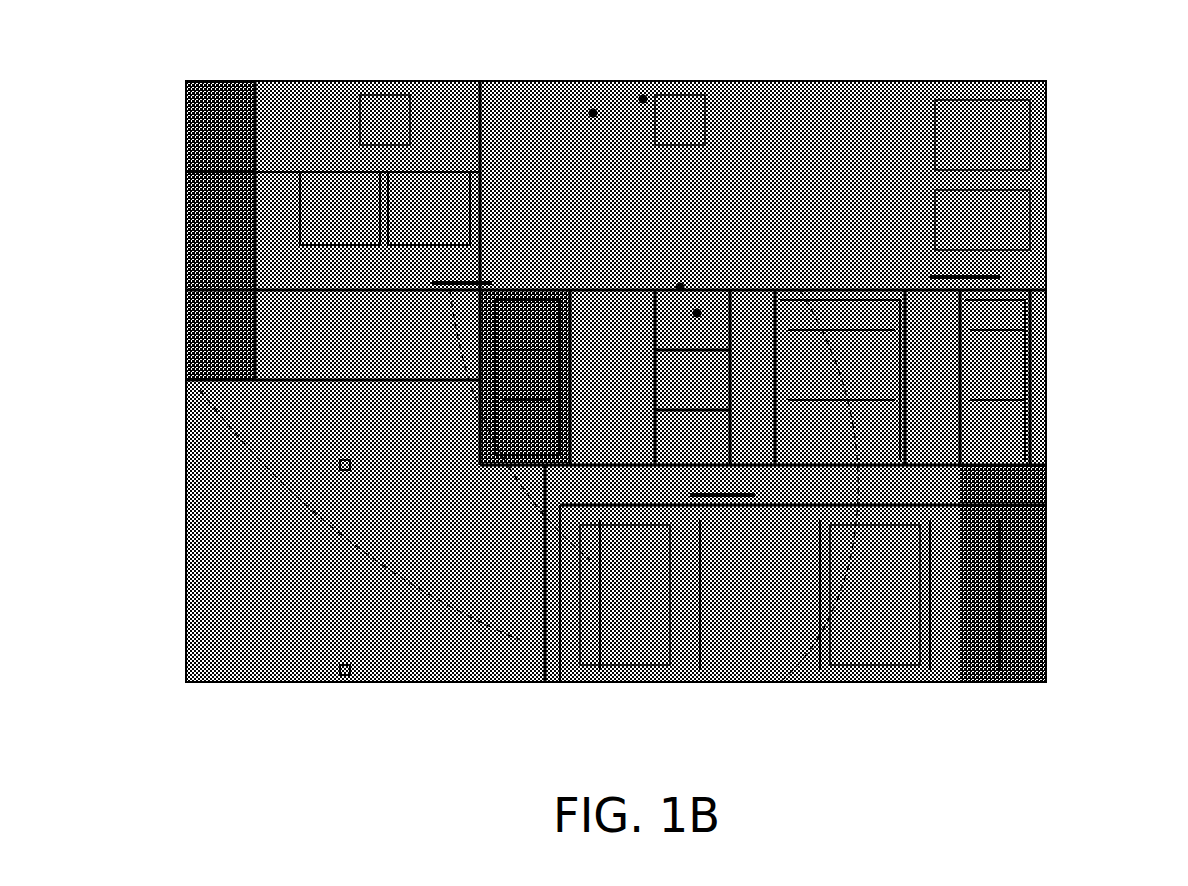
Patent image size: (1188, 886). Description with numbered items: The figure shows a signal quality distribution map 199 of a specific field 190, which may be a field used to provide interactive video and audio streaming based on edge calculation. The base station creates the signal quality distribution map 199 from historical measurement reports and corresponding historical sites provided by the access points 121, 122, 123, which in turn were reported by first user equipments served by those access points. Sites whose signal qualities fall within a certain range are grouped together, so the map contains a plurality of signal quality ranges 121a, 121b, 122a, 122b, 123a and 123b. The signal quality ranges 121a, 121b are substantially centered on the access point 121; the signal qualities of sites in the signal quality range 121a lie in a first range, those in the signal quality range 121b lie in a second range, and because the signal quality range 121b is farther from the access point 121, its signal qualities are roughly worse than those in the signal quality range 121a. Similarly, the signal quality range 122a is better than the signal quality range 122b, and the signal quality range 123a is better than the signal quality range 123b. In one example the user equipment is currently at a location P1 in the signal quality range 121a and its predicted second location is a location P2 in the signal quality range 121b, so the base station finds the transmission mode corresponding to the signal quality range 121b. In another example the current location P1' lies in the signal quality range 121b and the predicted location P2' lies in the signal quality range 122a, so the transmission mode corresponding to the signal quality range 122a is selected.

The signal quality distribution map 199 is at (140, 128).
The specific field 190 is at (1180, 686).
The access point 121 is at (463, 268).
The signal quality range 121a is at (383, 116).
The signal quality range 121b is at (679, 116).
The location P1 is at (594, 66).
The location P2 is at (642, 59).
The location P1' is at (722, 153).
The location P2' is at (754, 166).
The access point 122 is at (722, 487).
The signal quality range 122a is at (616, 548).
The signal quality range 122b is at (881, 588).
The access point 123 is at (965, 266).
The signal quality range 123a is at (1026, 264).
The signal quality range 123b is at (1026, 153).